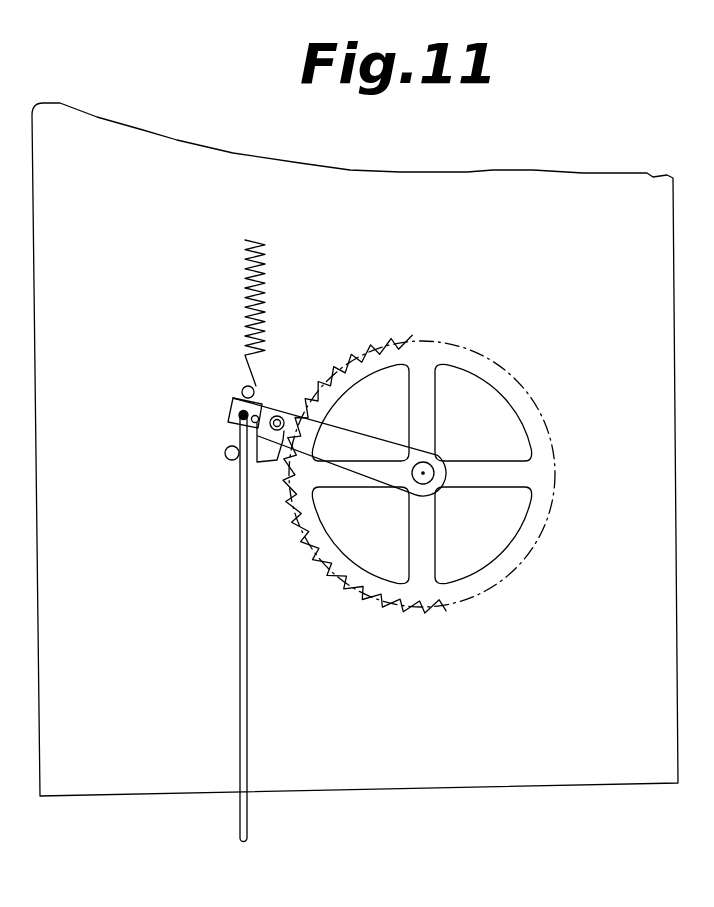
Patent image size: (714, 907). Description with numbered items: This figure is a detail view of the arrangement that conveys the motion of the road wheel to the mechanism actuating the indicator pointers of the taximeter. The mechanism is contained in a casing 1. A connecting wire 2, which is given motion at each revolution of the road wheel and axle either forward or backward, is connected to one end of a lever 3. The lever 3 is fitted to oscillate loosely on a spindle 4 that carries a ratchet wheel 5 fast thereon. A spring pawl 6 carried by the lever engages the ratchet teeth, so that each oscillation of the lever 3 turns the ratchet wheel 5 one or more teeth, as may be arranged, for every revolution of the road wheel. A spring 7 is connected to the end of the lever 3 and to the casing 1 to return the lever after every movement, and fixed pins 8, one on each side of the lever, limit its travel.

The casing 1 is at (355, 463).
The connecting wire 2 is at (244, 656).
The lever 3 is at (357, 443).
The spindle 4 is at (432, 466).
The ratchet wheel 5 is at (336, 572).
The spring pawl 6 is at (268, 466).
The spring 7 is at (260, 290).
The fixed pins 8 is at (226, 450).